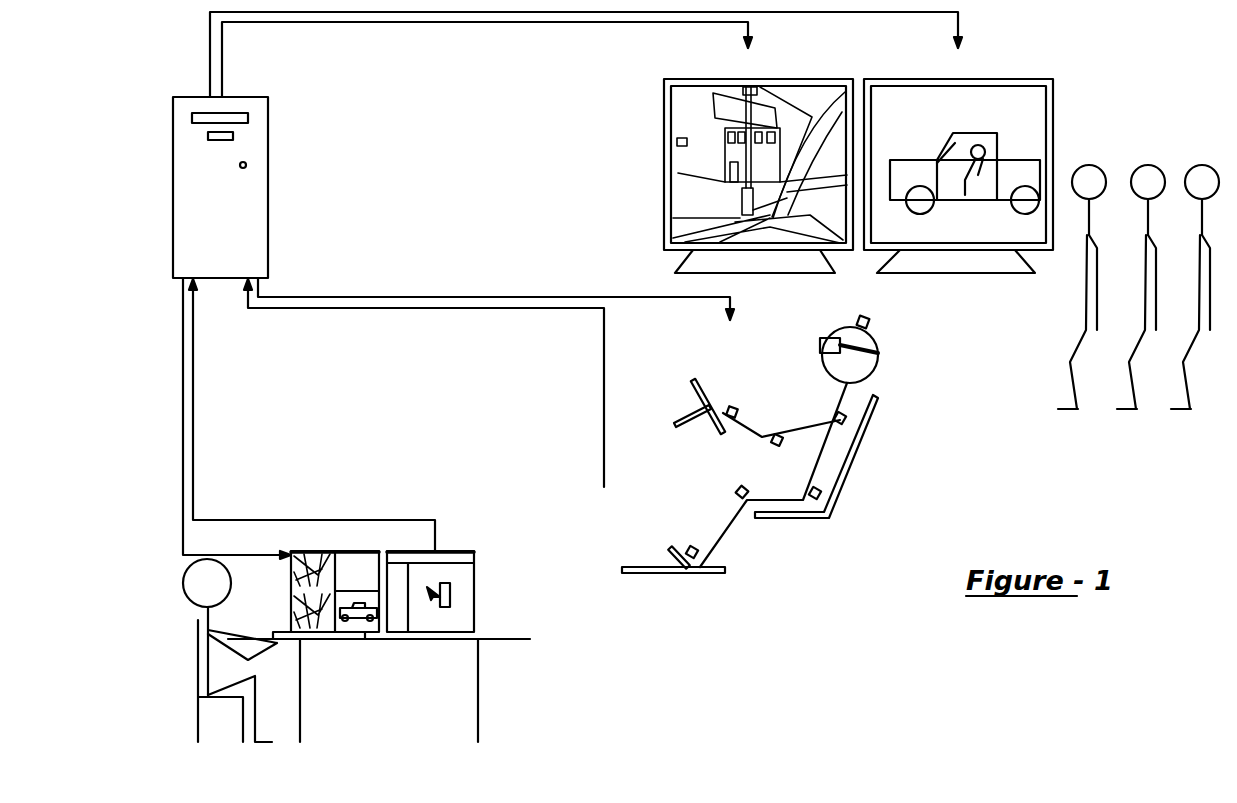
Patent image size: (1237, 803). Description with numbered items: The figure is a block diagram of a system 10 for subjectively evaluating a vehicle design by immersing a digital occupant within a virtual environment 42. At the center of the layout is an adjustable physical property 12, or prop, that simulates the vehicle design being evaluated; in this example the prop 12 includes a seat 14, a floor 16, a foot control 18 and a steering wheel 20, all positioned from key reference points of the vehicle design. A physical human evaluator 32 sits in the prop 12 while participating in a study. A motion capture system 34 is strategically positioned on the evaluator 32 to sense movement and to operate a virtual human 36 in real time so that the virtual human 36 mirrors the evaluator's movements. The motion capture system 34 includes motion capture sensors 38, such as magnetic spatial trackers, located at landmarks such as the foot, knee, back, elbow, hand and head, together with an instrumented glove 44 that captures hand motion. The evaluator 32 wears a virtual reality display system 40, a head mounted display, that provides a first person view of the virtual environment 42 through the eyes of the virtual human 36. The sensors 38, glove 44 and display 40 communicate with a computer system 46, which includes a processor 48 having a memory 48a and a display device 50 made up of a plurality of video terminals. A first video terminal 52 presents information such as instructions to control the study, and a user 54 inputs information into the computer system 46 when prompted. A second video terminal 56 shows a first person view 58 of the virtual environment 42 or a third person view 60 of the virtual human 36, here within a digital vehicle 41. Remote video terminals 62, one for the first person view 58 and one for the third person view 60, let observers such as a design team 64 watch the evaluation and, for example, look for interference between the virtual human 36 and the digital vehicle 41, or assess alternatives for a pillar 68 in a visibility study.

The system 10 is at (1108, 37).
The adjustable physical property 12 is at (880, 495).
The seat 14 is at (852, 462).
The floor 16 is at (672, 573).
The foot control 18 is at (672, 563).
The steering wheel 20 is at (690, 408).
The evaluator 32 is at (805, 425).
The motion capture system 34 is at (897, 362).
The virtual human 36 is at (990, 148).
The motion capture sensor 38 is at (868, 317).
The virtual reality display system 40 is at (823, 340).
The digital vehicle 41 is at (948, 145).
The virtual environment 42 is at (1027, 103).
The instrumented glove 44 is at (722, 406).
The computer system 46 is at (497, 597).
The processor 48 is at (173, 185).
The memory 48a is at (190, 116).
The display device 50 is at (457, 540).
The first video terminal 52 is at (485, 567).
The user 54 is at (182, 577).
The second video terminal 56 is at (360, 550).
The first person view 58 is at (678, 115).
The third person view 60 is at (357, 623).
The remote video terminal 62 is at (720, 72).
The design team 64 is at (1133, 412).
The pillar 68 is at (327, 550).